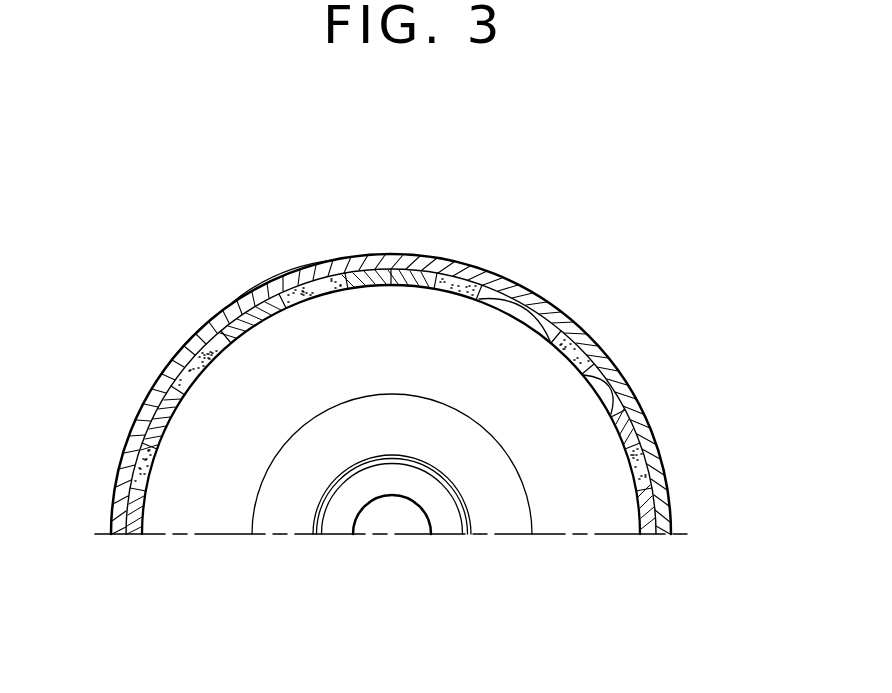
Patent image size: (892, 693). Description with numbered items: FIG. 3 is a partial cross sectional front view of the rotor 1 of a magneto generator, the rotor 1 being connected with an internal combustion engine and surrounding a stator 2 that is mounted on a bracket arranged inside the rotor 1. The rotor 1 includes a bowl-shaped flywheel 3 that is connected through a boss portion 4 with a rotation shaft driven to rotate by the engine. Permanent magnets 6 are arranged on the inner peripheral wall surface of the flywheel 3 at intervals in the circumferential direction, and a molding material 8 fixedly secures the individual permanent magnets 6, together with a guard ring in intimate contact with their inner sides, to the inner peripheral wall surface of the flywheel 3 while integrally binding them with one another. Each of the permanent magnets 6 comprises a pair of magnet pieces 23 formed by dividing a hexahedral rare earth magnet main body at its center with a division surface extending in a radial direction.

The rotor 1 is at (676, 460).
The stator 2 is at (192, 475).
The flywheel 3 is at (627, 373).
The boss portion 4 is at (440, 517).
The permanent magnets 6 is at (163, 377).
The molding material 8 is at (323, 277).
The magnet pieces 23 is at (277, 280).